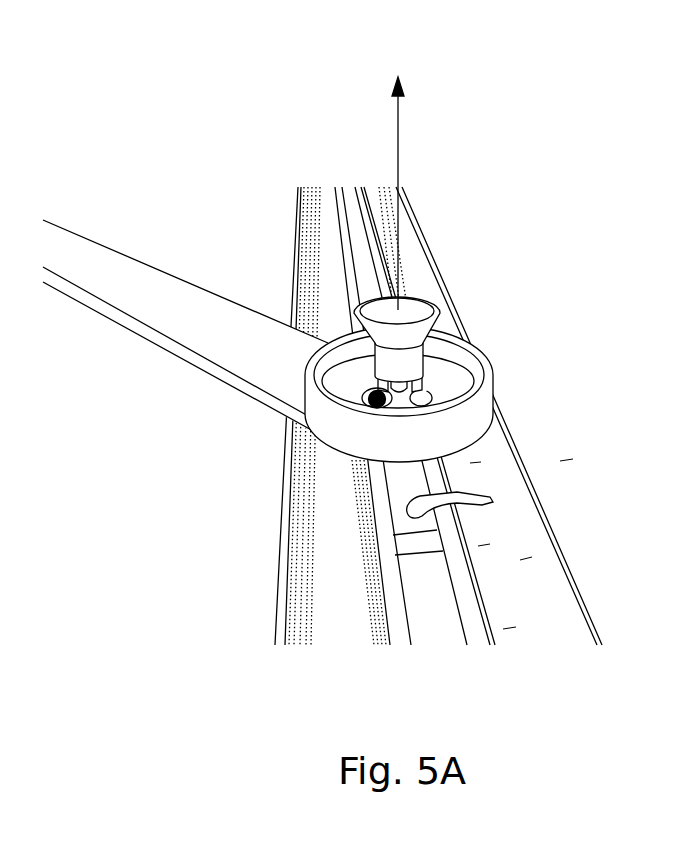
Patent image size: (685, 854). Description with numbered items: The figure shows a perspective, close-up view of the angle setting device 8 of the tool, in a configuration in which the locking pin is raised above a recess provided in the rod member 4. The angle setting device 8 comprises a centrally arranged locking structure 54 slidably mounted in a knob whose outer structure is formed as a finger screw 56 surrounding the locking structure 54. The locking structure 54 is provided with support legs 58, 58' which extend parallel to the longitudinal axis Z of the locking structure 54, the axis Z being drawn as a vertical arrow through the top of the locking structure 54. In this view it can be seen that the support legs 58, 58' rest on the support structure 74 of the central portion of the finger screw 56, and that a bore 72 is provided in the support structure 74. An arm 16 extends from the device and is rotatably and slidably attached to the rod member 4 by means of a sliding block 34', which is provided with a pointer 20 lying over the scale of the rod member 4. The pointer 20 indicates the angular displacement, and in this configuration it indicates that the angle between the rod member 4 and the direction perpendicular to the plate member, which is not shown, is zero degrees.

The rod member 4 is at (272, 596).
The angle setting device 8 is at (400, 333).
The arm 16 is at (137, 262).
The pointer 20 is at (467, 497).
The sliding block 34' is at (307, 458).
The locking structure 54 is at (433, 306).
The finger screw 56 is at (487, 368).
The support leg 58 is at (313, 328).
The support leg 58' is at (485, 380).
The bore 72 is at (372, 393).
The support structure 74 is at (421, 399).
The longitudinal axis Z is at (397, 153).